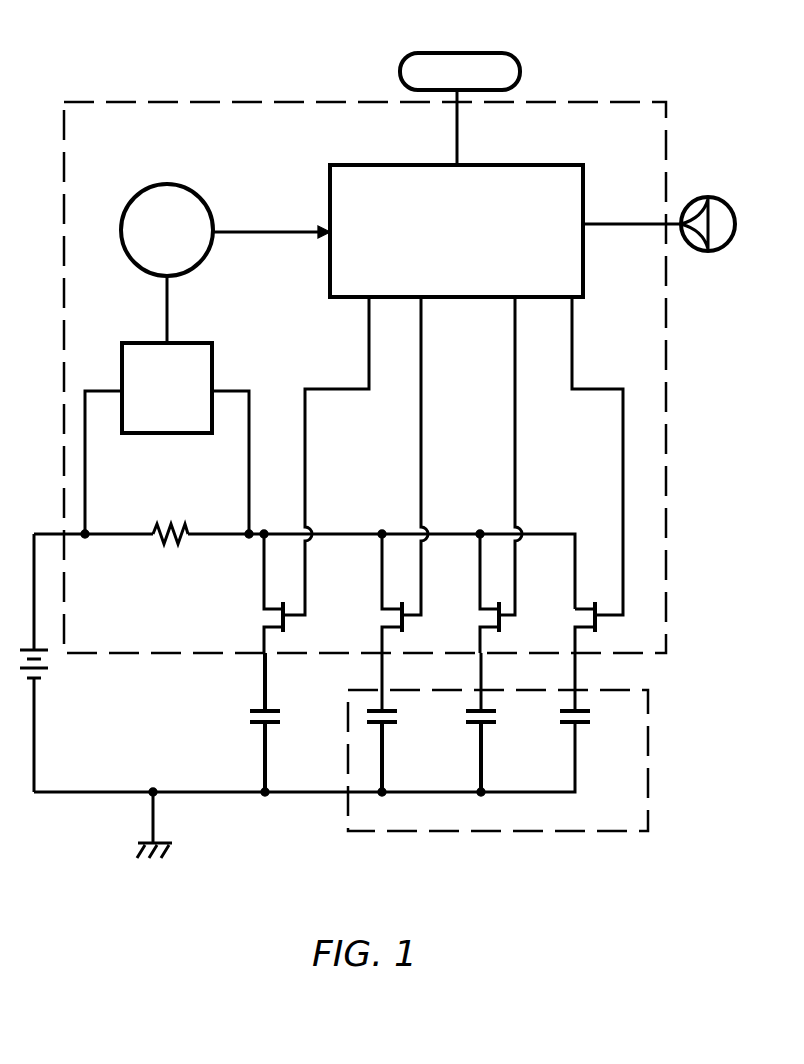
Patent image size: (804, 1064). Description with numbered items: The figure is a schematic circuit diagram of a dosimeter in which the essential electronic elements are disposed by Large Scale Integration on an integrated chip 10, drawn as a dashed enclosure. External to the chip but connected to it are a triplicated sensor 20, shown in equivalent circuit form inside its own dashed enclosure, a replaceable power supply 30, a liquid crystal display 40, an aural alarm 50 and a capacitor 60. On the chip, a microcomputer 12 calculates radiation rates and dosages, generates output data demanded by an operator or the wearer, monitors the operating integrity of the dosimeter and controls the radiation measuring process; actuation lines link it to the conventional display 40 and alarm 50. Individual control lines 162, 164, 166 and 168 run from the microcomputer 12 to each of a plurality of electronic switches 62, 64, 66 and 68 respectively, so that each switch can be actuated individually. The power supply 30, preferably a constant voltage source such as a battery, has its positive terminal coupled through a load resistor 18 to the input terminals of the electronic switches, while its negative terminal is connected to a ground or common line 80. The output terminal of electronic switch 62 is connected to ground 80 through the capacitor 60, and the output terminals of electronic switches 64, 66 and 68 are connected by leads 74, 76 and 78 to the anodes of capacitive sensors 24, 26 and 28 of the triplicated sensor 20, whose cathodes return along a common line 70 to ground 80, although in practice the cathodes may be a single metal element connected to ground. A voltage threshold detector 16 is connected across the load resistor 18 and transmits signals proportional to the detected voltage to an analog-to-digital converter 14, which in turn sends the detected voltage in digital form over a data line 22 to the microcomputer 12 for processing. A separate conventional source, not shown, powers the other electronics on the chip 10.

The integrated chip 10 is at (666, 331).
The microcomputer 12 is at (585, 282).
The analog-to-digital converter 14 is at (140, 207).
The voltage threshold detector 16 is at (135, 343).
The load resistor 18 is at (172, 526).
The triplicated sensor 20 is at (648, 712).
The data line 22 is at (258, 230).
The capacitive sensor 24 is at (385, 724).
The capacitive sensor 26 is at (484, 724).
The capacitive sensor 28 is at (578, 724).
The power supply 30 is at (50, 668).
The liquid crystal display 40 is at (518, 60).
The aural alarm 50 is at (715, 197).
The capacitor 60 is at (268, 724).
The electronic switch 62 is at (286, 622).
The electronic switch 64 is at (405, 622).
The electronic switch 66 is at (502, 622).
The electronic switch 68 is at (598, 622).
The common ground line 70 is at (445, 794).
The lead to capacitor 24 74 is at (382, 677).
The lead to capacitor 26 76 is at (481, 677).
The lead to capacitor 28 78 is at (575, 677).
The ground or common line 80 is at (153, 822).
The control line 162 is at (305, 453).
The control line 164 is at (421, 453).
The control line 166 is at (516, 455).
The control line 168 is at (623, 483).